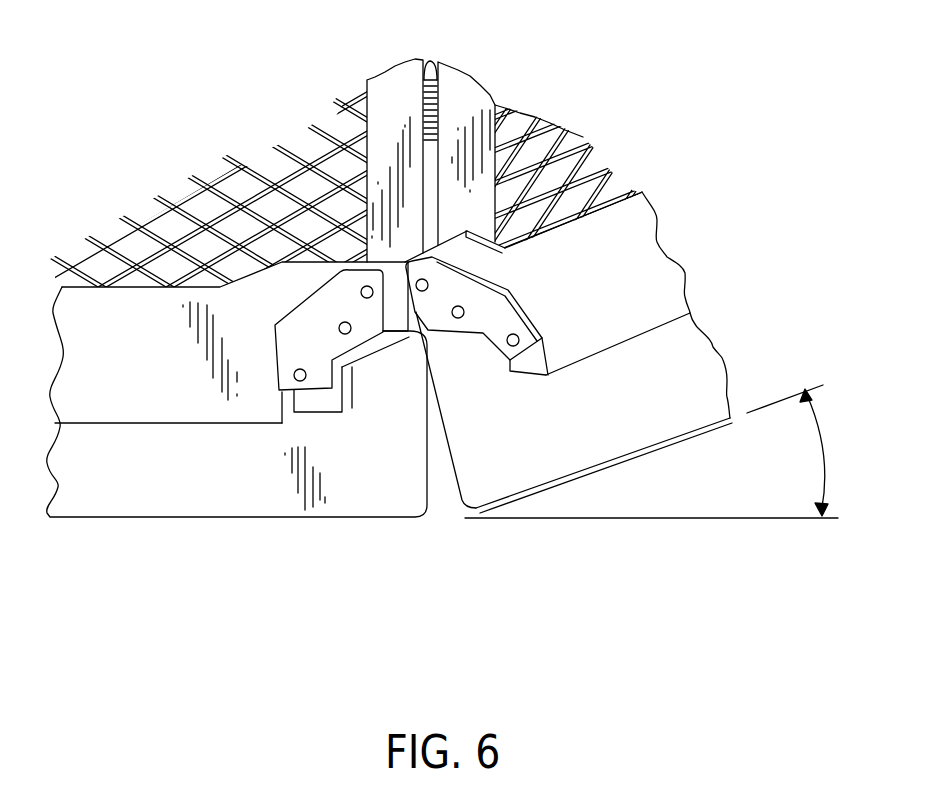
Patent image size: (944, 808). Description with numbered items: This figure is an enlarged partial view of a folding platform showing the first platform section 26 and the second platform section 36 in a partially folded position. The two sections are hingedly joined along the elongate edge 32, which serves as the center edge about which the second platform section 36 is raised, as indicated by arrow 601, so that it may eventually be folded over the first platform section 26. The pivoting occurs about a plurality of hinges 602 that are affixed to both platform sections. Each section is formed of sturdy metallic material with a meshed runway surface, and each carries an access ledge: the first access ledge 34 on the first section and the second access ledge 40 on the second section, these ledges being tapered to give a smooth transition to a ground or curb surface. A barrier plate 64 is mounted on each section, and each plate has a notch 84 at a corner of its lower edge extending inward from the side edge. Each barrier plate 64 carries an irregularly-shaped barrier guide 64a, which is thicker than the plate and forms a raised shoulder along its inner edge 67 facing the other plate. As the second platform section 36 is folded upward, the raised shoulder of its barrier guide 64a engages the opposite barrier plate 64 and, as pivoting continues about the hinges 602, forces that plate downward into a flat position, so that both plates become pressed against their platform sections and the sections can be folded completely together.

The first platform section 26 is at (190, 180).
The second platform section 36 is at (592, 134).
The hinges 602 is at (430, 60).
The first access ledge 34 is at (207, 498).
The elongate edge 32 is at (448, 497).
The second access ledge 40 is at (658, 426).
The barrier plate 64 is at (159, 388).
The barrier guide 64a is at (301, 297).
The inner edge 67 is at (383, 308).
The notch 84 is at (296, 420).
The arrow 601 is at (826, 445).